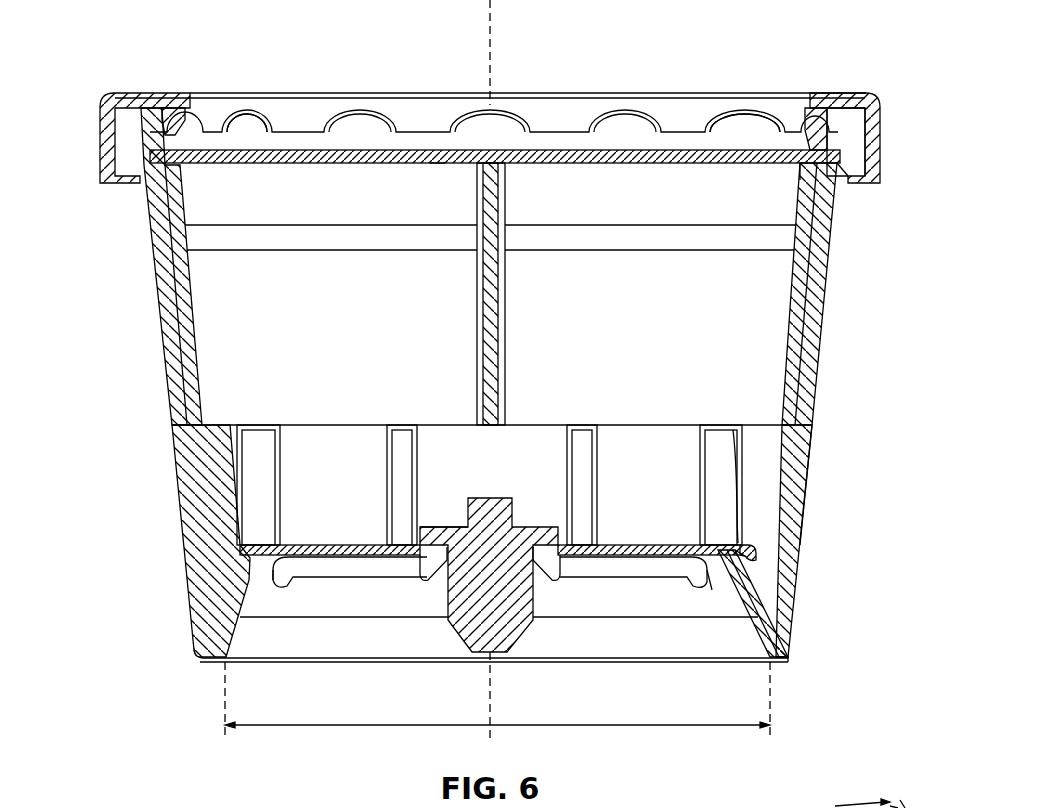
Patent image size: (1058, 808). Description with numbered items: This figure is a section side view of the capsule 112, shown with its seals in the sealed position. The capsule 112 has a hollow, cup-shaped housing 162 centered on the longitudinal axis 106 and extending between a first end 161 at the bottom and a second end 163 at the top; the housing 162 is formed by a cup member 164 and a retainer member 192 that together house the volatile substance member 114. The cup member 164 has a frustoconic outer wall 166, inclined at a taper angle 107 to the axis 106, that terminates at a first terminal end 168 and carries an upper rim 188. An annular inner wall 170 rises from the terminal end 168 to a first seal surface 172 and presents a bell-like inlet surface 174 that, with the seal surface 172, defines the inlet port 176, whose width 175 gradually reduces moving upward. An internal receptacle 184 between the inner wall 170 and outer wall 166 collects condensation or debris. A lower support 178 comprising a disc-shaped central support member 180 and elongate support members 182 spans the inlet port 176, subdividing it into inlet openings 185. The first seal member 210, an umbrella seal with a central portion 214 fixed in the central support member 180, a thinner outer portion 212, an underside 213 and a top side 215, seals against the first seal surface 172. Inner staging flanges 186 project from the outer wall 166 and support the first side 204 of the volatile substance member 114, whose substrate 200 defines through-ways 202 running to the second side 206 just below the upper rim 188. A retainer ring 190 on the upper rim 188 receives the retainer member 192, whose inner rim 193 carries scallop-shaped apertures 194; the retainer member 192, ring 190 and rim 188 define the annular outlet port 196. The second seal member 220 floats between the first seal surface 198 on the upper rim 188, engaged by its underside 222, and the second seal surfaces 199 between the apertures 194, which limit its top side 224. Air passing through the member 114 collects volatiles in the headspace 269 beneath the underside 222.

The axis 106 is at (492, 27).
The taper angle 107 is at (898, 800).
The capsule 112 is at (125, 76).
The volatile substance member 114 is at (508, 325).
The first end 161 is at (779, 662).
The housing 162 is at (172, 457).
The second end 163 is at (856, 91).
The cup member 164 is at (821, 319).
The outer wall 166 is at (793, 563).
The first terminal end 168 is at (205, 660).
The inner wall 170 is at (745, 565).
The first seal surface 172 is at (744, 544).
The inlet surface 174 is at (728, 588).
The width 175 is at (447, 727).
The inlet port 176 is at (272, 610).
The lower support 178 is at (348, 564).
The central support member 180 is at (560, 557).
The elongate support members 182 is at (593, 568).
The internal receptacle 184 is at (772, 598).
The inlet openings 185 is at (412, 610).
The inner staging flanges 186 is at (212, 442).
The upper rim 188 is at (841, 177).
The retainer ring 190 is at (852, 142).
The retainer member 192 is at (882, 97).
The inner rim 193 is at (171, 110).
The apertures 194 is at (390, 122).
The outlet port 196 is at (619, 133).
The first seal surface 198 is at (848, 152).
The second seal surfaces 199 is at (817, 138).
The substrate 200 is at (508, 215).
The through-ways 202 is at (363, 359).
The first side 204 is at (792, 440).
The second side 206 is at (803, 178).
The first seal member 210 is at (458, 520).
The outer portion 212 is at (657, 540).
The underside 213 is at (708, 583).
The central portion 214 is at (497, 508).
The top side 215 is at (741, 543).
The second seal member 220 is at (552, 145).
The underside 222 is at (603, 167).
The top side 224 is at (675, 132).
The headspace 269 is at (436, 178).